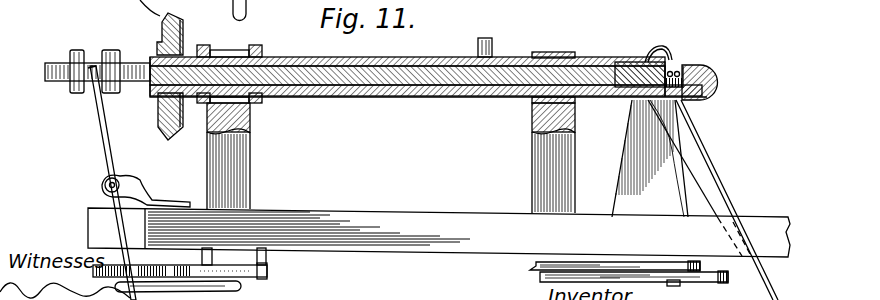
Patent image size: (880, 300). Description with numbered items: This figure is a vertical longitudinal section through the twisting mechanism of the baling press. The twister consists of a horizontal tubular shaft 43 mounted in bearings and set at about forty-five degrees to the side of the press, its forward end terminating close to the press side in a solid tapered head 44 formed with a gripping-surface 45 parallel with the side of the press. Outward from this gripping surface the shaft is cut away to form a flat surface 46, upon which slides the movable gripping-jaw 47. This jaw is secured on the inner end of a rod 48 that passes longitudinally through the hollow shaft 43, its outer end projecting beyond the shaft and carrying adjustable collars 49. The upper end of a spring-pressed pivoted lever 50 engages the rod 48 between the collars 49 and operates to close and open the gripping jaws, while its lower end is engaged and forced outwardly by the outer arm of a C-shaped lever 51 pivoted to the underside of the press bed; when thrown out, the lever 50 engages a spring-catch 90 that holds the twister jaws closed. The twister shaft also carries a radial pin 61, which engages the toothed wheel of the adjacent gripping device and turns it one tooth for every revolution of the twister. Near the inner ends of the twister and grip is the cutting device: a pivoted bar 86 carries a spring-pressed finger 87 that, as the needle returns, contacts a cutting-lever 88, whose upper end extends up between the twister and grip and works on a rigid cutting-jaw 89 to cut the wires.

The tubular shaft 43 is at (423, 97).
The solid tapered head 44 is at (723, 78).
The gripping-surface 45 is at (678, 61).
The flat surface 46 is at (694, 100).
The movable gripping-jaw 47 is at (616, 61).
The rod 48 is at (44, 72).
The adjustable collars 49 is at (115, 50).
The spring-pressed pivoted lever 50 is at (97, 133).
The C-shaped lever 51 is at (190, 286).
The radial pin 61 is at (492, 40).
The pivoted bar 86 is at (548, 262).
The spring-pressed finger 87 is at (665, 272).
The cutting-lever 88 is at (710, 185).
The rigid cutting-jaw 89 is at (703, 65).
The spring-catch 90 is at (150, 272).